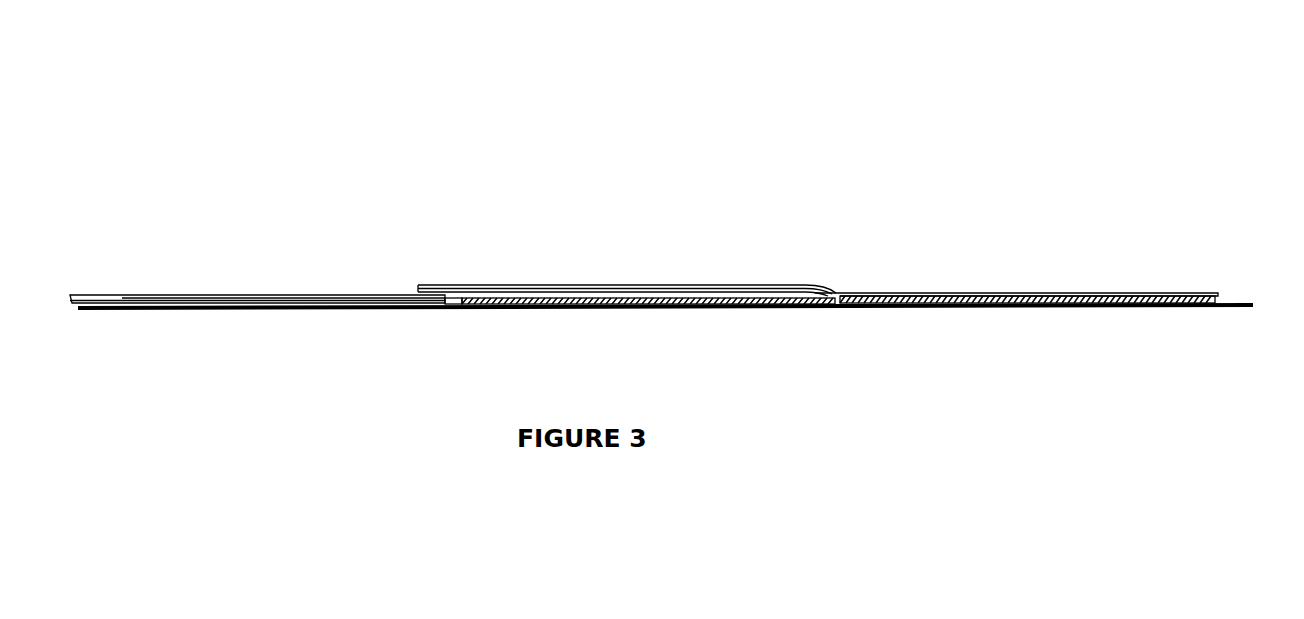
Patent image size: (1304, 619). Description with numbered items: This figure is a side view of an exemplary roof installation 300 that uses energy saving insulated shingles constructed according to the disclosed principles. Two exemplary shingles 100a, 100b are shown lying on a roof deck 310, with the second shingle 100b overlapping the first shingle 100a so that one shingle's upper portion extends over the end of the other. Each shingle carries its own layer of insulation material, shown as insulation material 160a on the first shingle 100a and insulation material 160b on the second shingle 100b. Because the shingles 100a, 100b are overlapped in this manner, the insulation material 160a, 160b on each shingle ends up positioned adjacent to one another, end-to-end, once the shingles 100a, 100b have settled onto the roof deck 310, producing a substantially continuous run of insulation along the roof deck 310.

The roof installation 300 is at (944, 119).
The roof deck 310 is at (161, 322).
The first energy saving insulated shingle 100a is at (180, 308).
The second energy saving insulated shingle 100b is at (764, 288).
The insulation material of first shingle 160a is at (558, 305).
The insulation material of second shingle 160b is at (952, 305).